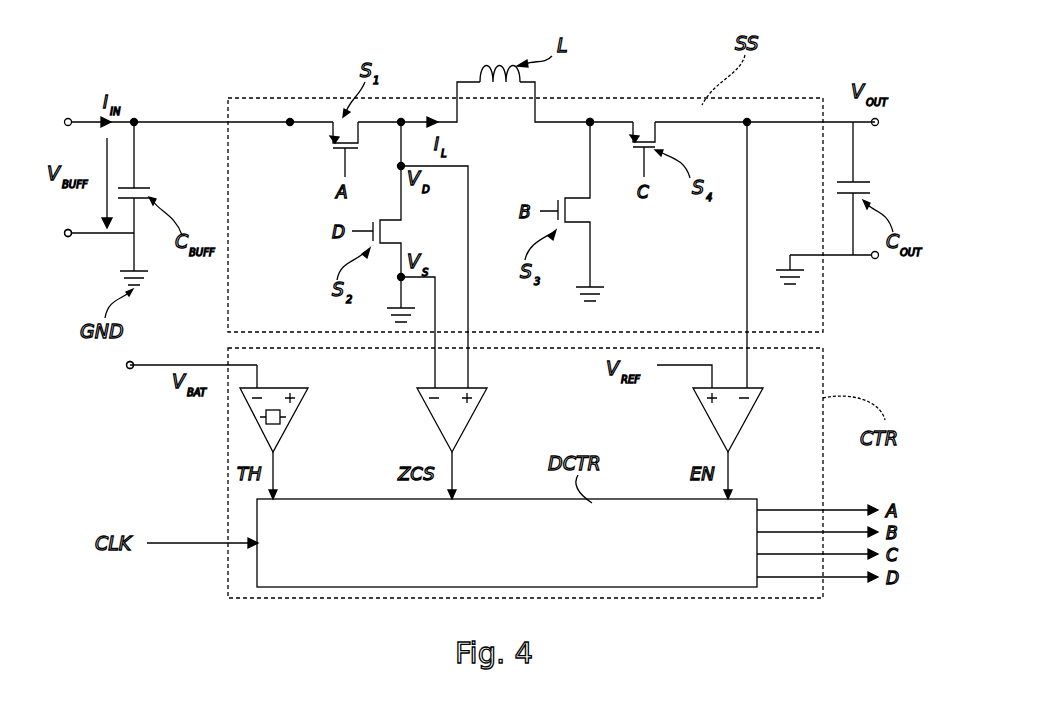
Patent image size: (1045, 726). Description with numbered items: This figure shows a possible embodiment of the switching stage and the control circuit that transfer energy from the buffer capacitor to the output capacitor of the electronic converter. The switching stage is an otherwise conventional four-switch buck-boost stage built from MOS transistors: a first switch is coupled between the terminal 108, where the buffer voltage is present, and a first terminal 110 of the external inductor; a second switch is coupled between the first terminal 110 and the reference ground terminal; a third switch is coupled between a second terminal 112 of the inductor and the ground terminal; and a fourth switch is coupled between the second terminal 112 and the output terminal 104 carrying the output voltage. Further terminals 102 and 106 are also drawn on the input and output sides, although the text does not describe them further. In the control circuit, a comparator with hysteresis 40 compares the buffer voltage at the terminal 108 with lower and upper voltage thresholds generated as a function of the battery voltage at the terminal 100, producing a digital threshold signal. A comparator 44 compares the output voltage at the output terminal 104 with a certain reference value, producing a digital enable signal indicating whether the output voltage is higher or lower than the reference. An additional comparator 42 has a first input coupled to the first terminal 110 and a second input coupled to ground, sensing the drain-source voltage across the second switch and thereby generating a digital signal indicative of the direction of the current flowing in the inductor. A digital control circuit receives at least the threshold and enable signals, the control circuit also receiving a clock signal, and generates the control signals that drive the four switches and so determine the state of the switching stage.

The terminal 100 is at (130, 369).
The ground input terminal 102 is at (68, 238).
The output terminal 104 is at (878, 126).
The output ground terminal 106 is at (878, 259).
The terminal 108 is at (67, 118).
The first terminal of the inductor 110 is at (403, 118).
The second terminal of the inductor 112 is at (592, 118).
The comparator with hysteresis 40 is at (292, 420).
The comparator 42 is at (468, 420).
The comparator 44 is at (745, 420).